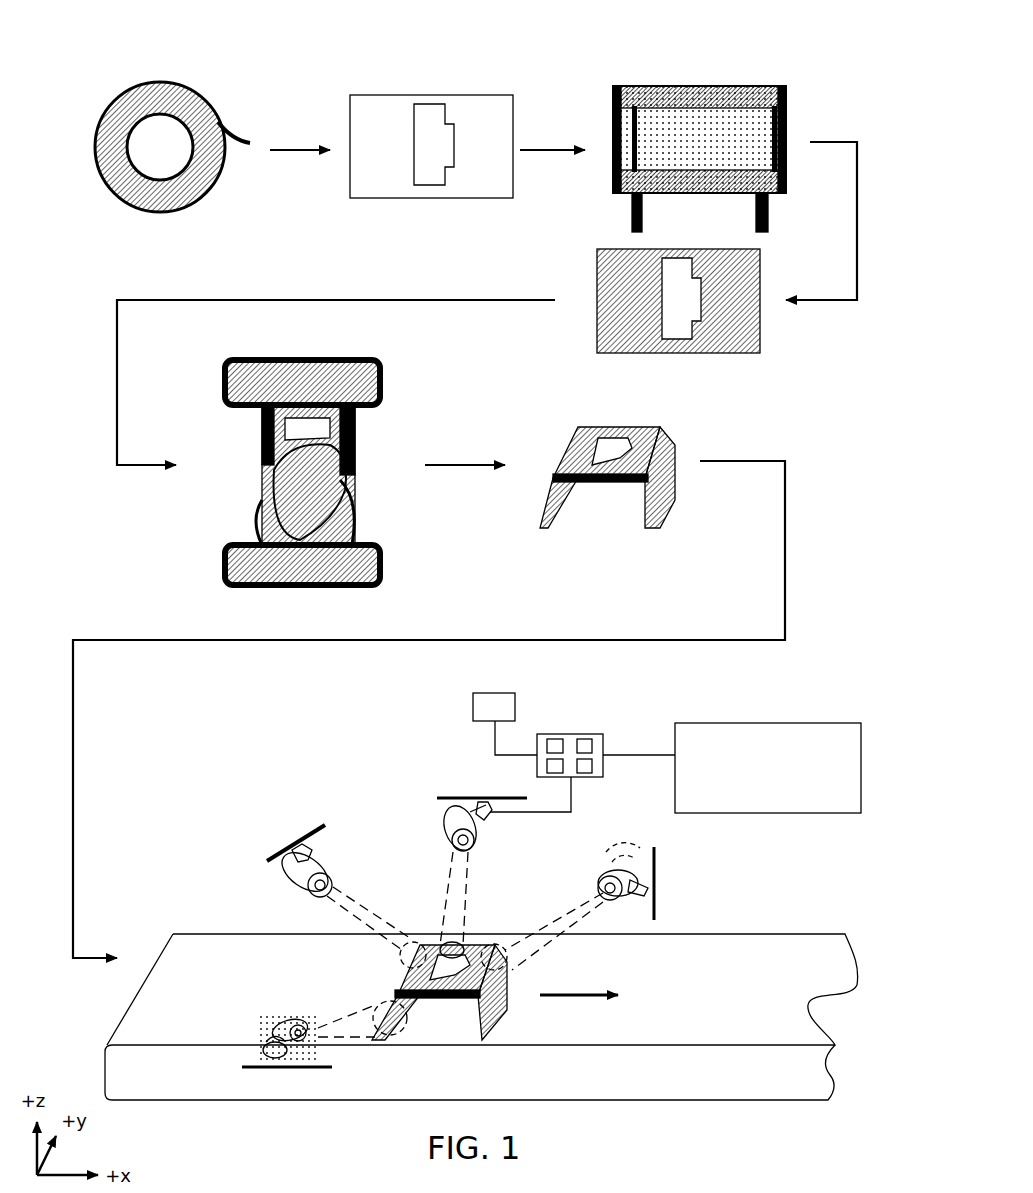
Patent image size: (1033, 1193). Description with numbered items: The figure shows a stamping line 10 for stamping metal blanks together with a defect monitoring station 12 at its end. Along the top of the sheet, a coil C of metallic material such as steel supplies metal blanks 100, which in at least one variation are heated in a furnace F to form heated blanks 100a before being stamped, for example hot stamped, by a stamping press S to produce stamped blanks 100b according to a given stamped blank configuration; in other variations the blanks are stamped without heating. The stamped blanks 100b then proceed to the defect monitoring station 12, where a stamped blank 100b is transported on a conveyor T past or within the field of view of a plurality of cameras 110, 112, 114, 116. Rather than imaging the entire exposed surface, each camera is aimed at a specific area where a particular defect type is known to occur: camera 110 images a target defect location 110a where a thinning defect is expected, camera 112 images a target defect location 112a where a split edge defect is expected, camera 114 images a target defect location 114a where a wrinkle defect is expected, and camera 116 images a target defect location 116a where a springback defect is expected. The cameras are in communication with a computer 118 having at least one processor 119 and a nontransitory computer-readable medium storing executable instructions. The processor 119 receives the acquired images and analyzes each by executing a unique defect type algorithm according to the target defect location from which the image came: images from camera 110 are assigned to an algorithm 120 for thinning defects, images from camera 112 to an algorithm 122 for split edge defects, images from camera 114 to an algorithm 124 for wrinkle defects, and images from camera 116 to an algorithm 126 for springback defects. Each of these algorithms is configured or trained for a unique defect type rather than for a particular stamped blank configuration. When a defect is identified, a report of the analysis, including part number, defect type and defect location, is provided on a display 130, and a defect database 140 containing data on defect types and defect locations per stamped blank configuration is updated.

The coil C is at (166, 80).
The metal blanks 100 is at (461, 86).
The furnace F is at (713, 83).
The stamping line 10 is at (803, 46).
The heated blanks 100a is at (594, 270).
The stamping press S is at (386, 382).
The stamped blanks 100b is at (656, 422).
The defect monitoring station 12 is at (230, 740).
The defect database 140 is at (472, 700).
The computer 118 is at (573, 733).
The processor 119 is at (580, 733).
The algorithm 120 is at (553, 742).
The algorithm 122 is at (586, 746).
The algorithm 124 is at (554, 766).
The algorithm 126 is at (586, 765).
The display 130 is at (803, 722).
The camera 112 is at (441, 828).
The target defect location 112a is at (447, 940).
The camera 110 is at (268, 881).
The target defect location 110a is at (403, 956).
The camera 114 is at (584, 878).
The target defect location 114a is at (512, 958).
The camera 116 is at (248, 1024).
The target defect location 116a is at (384, 1003).
The conveyor T is at (274, 1107).